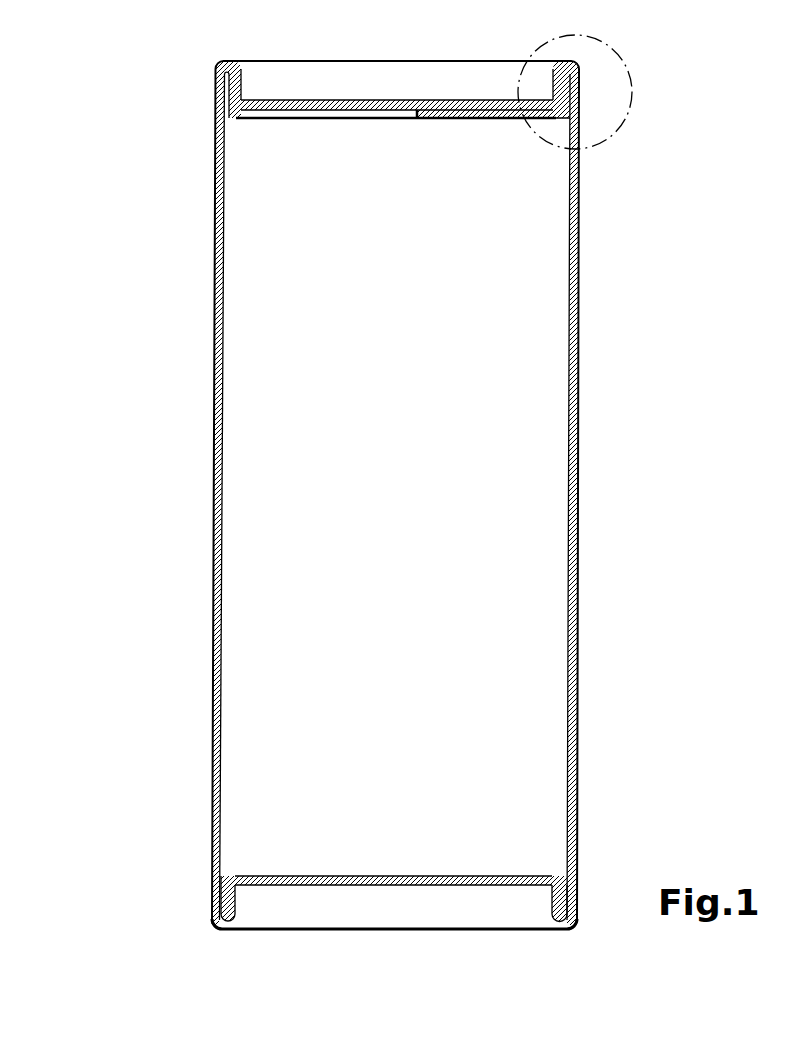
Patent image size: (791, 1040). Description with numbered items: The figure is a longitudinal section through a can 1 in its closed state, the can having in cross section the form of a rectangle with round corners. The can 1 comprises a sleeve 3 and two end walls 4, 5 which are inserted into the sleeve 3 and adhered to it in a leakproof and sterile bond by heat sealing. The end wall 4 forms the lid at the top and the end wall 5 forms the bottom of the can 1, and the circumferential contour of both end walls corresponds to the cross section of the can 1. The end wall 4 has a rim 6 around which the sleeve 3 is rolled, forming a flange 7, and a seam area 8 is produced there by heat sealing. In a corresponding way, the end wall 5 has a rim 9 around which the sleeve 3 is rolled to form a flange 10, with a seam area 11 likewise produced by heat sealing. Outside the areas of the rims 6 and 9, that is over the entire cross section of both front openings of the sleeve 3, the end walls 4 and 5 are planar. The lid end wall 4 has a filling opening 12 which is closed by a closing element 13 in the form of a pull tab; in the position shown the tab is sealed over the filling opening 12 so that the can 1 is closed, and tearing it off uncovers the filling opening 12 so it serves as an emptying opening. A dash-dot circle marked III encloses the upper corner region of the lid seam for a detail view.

The can 1 is at (148, 333).
The sleeve 3 is at (580, 308).
The end wall 4 is at (488, 119).
The end wall 5 is at (425, 878).
The rim 6 is at (219, 106).
The flange 7 is at (240, 68).
The seam area 8 is at (205, 87).
The rim 9 is at (236, 905).
The flange 10 is at (552, 907).
The seam area 11 is at (204, 896).
The filling opening 12 is at (310, 113).
The closing element 13 is at (383, 102).
The detail circle III is at (632, 103).